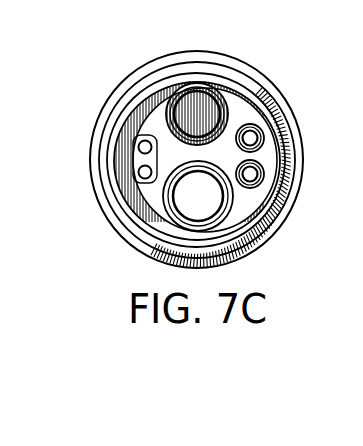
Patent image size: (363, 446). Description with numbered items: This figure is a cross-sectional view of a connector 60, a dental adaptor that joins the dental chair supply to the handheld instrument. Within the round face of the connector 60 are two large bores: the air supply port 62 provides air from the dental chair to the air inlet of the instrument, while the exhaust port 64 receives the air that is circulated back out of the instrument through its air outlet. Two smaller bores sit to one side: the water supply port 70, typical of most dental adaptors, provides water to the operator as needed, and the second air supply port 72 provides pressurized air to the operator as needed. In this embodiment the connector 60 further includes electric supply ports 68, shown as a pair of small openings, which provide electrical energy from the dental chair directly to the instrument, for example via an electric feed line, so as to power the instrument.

The connector 60 is at (133, 64).
The air supply port 62 is at (197, 113).
The exhaust port 64 is at (188, 197).
The electric supply ports 68 is at (140, 172).
The water supply port 70 is at (251, 138).
The second air supply port 72 is at (251, 174).